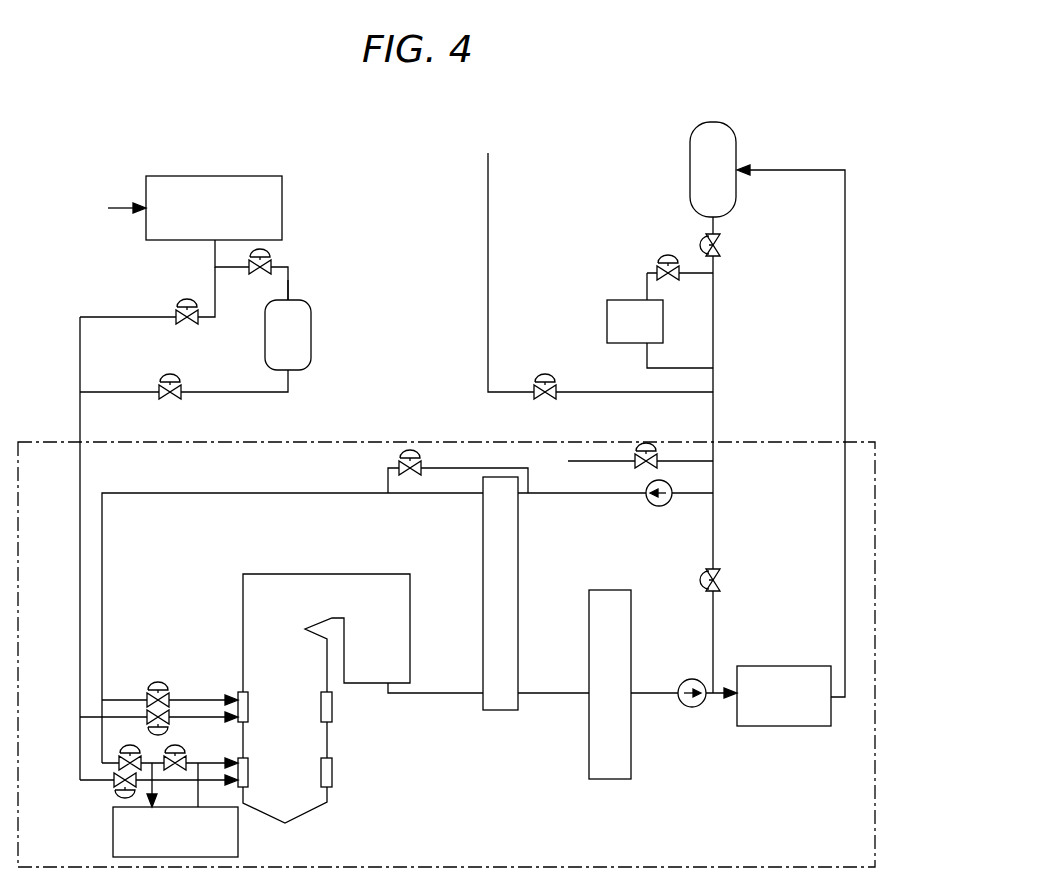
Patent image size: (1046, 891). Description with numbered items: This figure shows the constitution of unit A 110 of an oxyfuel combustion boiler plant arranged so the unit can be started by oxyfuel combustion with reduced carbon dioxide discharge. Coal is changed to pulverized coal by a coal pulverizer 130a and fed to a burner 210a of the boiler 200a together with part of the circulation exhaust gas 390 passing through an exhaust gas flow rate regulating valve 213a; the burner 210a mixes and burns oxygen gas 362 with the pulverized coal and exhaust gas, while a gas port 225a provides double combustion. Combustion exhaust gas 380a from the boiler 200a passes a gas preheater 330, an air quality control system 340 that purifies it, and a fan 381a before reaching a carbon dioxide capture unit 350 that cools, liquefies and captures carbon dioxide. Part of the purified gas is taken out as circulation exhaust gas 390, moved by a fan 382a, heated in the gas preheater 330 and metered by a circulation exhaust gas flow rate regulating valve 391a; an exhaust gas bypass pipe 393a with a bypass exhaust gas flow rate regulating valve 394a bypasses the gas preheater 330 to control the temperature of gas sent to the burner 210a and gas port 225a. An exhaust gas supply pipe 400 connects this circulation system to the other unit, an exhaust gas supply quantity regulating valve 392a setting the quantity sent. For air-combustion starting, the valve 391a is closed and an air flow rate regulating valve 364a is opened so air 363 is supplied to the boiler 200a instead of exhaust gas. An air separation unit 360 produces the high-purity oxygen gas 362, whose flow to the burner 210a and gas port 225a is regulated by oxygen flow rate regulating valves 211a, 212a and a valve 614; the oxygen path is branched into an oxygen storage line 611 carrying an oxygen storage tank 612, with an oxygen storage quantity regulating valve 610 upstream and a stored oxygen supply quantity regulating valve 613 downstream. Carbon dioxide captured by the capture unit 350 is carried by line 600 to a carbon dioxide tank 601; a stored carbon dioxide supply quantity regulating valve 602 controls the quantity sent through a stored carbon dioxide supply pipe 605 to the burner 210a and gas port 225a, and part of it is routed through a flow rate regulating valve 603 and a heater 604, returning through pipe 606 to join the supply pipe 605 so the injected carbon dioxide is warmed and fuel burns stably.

The unit A 110 is at (270, 441).
The coal pulverizer 130a is at (240, 843).
The boiler 200a is at (240, 600).
The burner 210a is at (333, 773).
The oxygen flow rate regulating valve 211a is at (118, 797).
The oxygen flow rate regulating valve 212a is at (165, 727).
The exhaust gas flow rate regulating valve 213a is at (157, 686).
The gas port 225a is at (333, 708).
The gas preheater 330 is at (520, 568).
The air quality control system 340 is at (605, 780).
The CO2 capture unit 350 is at (792, 666).
The air separation unit 360 is at (213, 176).
The high-purity oxygen gas 362 is at (79, 648).
The air 363 is at (117, 214).
The air flow rate regulating valve 364a is at (645, 448).
The combustion exhaust gas 380a is at (447, 693).
The fan 381a is at (697, 708).
The fan 382a is at (648, 505).
The circulation exhaust gas 390 is at (152, 493).
The circulation exhaust gas flow rate regulating valve 391a is at (703, 573).
The exhaust gas supply quantity regulating valve 392a is at (545, 375).
The exhaust gas bypass pipe 393a is at (386, 480).
The bypass exhaust gas flow rate regulating valve 394a is at (420, 462).
The exhaust gas supply pipe 400 is at (488, 228).
The CO2 return line 600 is at (845, 565).
The carbon dioxide tank 601 is at (690, 145).
The stored carbon dioxide supply quantity regulating valve 602 is at (722, 247).
The flow rate regulating valve 603 is at (666, 256).
The heater 604 is at (615, 300).
The stored carbon dioxide supply pipe 605 is at (715, 345).
The bypass pipe 606 is at (690, 276).
The oxygen storage quantity regulating valve 610 is at (270, 258).
The oxygen storage line 611 is at (288, 290).
The oxygen storage tank 612 is at (311, 333).
The stored oxygen supply quantity regulating valve 613 is at (178, 383).
The valve 614 is at (180, 322).